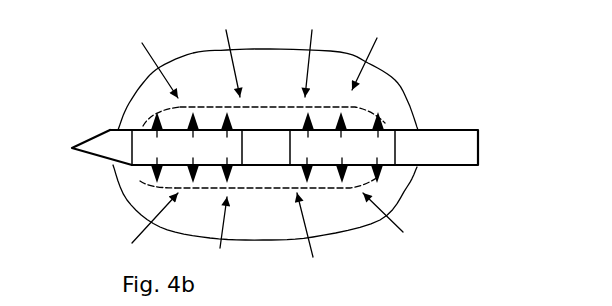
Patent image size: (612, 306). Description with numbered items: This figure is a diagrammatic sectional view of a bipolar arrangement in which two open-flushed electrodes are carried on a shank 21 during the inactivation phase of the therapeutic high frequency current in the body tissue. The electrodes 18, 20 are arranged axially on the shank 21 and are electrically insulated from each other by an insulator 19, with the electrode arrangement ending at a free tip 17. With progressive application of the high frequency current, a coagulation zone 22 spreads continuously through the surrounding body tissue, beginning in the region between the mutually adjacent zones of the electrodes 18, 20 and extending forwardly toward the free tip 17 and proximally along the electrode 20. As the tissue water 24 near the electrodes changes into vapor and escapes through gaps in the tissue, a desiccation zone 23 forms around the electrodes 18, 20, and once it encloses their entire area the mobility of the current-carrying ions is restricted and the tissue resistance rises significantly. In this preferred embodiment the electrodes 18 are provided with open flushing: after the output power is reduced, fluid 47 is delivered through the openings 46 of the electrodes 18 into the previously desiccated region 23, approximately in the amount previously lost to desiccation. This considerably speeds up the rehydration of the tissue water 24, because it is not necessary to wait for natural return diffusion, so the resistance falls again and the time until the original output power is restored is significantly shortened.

The free tip 17 is at (108, 153).
The electrode 18 is at (178, 135).
The insulator 19 is at (273, 135).
The electrode 20 is at (383, 127).
The shank 21 is at (452, 137).
The coagulation zone 22 is at (318, 72).
The desiccation zone 23 is at (360, 117).
The tissue water 24 is at (153, 63).
The openings 46 is at (155, 125).
The fluid 47 is at (143, 182).